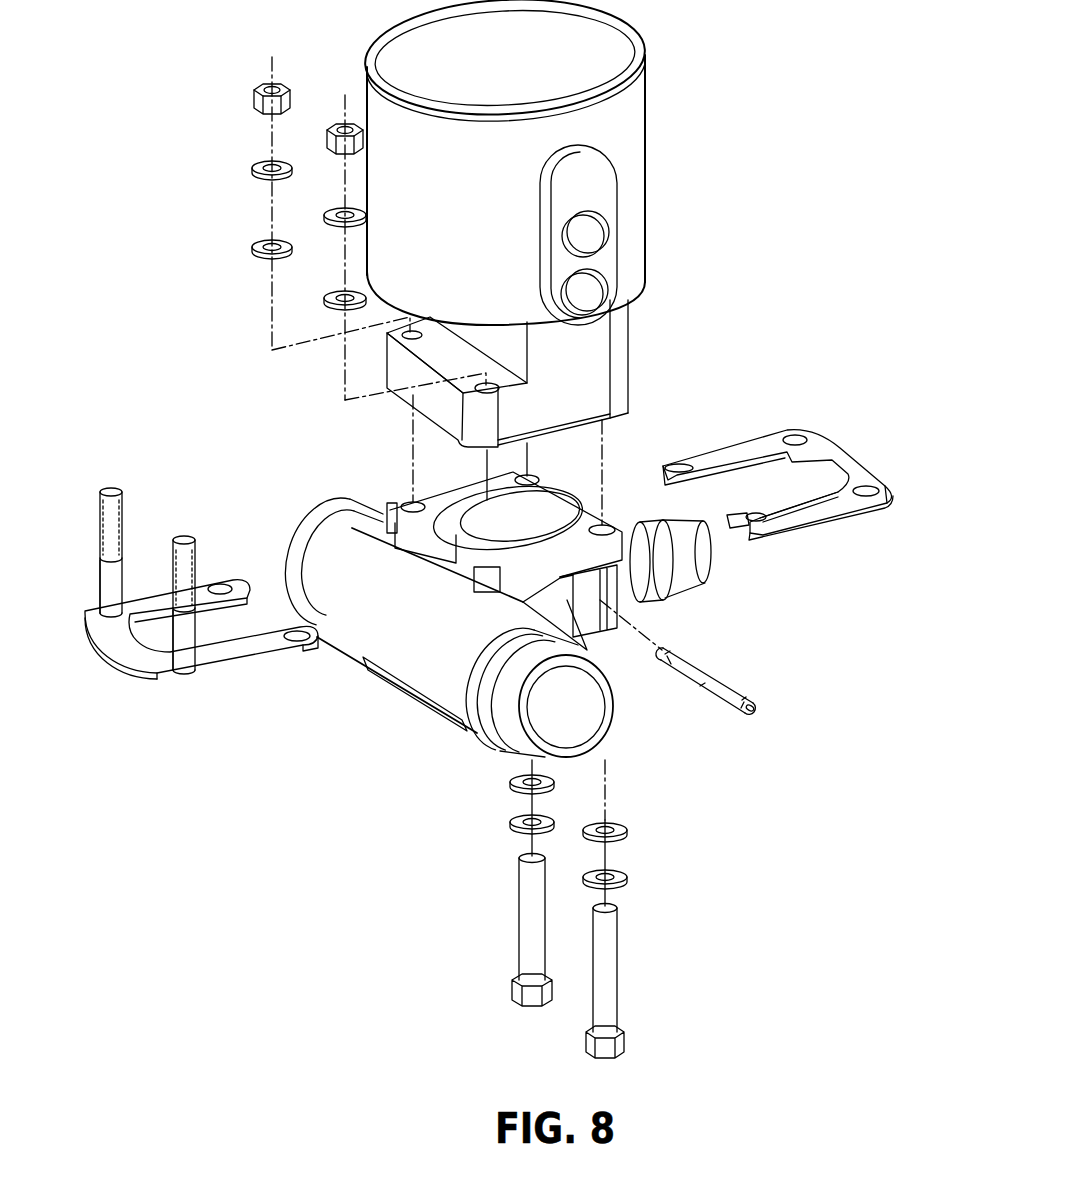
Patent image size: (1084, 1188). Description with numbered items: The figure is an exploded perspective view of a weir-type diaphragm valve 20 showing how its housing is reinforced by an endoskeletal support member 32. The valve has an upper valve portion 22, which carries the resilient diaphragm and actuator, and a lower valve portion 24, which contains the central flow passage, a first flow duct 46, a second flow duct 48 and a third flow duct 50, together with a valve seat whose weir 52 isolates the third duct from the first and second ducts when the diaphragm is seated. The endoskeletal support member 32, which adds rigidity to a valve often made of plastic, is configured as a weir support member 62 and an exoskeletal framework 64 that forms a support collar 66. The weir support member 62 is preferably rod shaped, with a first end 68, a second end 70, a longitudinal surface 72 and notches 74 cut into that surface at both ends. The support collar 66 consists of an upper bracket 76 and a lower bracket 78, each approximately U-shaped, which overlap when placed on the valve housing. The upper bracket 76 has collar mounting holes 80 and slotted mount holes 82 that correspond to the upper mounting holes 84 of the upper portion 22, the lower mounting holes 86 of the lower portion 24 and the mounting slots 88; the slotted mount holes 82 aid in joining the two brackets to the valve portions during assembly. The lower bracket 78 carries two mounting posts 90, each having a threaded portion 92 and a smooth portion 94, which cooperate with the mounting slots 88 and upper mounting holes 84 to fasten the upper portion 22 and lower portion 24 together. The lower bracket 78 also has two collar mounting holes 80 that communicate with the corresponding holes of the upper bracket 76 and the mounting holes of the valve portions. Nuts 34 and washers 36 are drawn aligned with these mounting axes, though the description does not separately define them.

The weir-type diaphragm valve 20 is at (697, 72).
The upper valve portion 22 is at (647, 182).
The lower valve portion 24 is at (392, 687).
The endoskeletal support member 32 is at (717, 677).
The nut 34 is at (283, 78).
The washer 36 is at (252, 168).
The first flow duct 46 is at (613, 718).
The second flow duct 48 is at (308, 515).
The third flow duct 50 is at (715, 578).
The weir 52 is at (462, 505).
The weir support member 62 is at (740, 694).
The exoskeletal framework 64 is at (837, 517).
The support collar 66 is at (889, 506).
The first end 68 is at (675, 647).
The second end 70 is at (760, 708).
The longitudinal surface 72 is at (702, 687).
The notches 74 is at (665, 660).
The upper bracket 76 is at (745, 440).
The lower bracket 78 is at (240, 670).
The collar mounting holes 80 is at (802, 433).
The slotted mount holes 82 is at (668, 464).
The upper mounting holes 84 is at (347, 358).
The lower mounting holes 86 is at (533, 478).
The mounting slots 88 is at (395, 512).
The mounting posts 90 is at (100, 520).
The threaded portion 92 is at (125, 528).
The smooth portion 94 is at (100, 572).